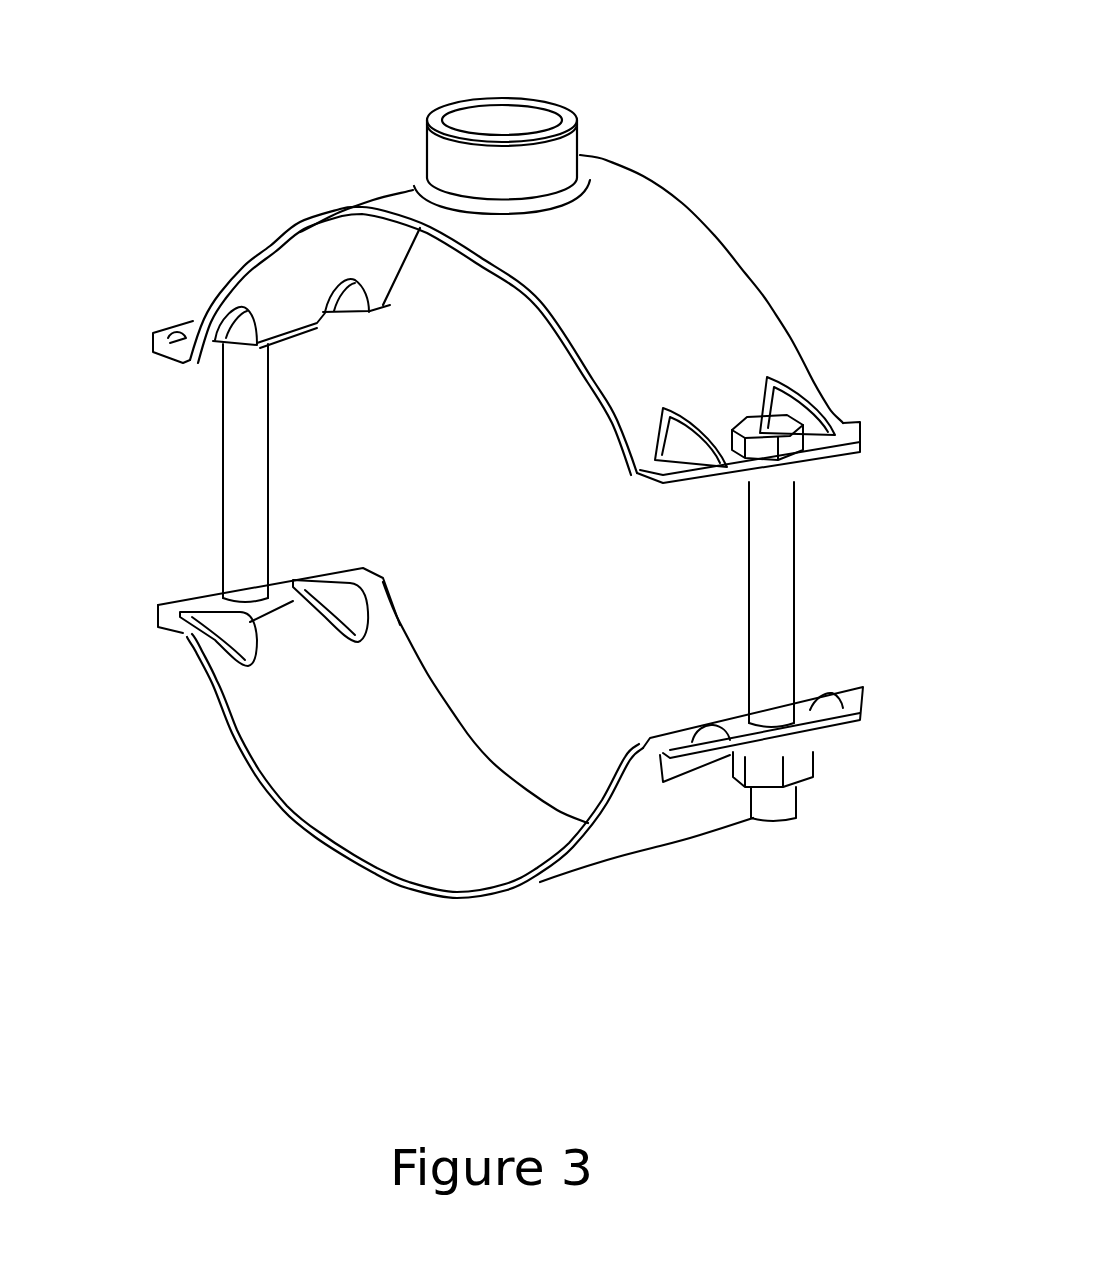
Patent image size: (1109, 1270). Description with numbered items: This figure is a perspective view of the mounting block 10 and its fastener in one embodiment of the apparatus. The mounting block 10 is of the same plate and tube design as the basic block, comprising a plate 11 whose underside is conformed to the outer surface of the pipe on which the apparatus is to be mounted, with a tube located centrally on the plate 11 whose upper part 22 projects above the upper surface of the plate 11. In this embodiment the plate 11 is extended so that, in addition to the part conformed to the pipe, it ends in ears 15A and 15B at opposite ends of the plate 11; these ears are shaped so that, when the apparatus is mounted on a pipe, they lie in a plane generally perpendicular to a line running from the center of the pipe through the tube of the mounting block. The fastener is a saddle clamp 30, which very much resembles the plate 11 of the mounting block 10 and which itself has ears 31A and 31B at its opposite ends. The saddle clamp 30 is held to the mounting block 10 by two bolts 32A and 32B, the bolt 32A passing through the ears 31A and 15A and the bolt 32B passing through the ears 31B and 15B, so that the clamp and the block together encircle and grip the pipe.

The mounting block 10 is at (696, 62).
The plate 11 is at (720, 247).
The upper part of tube 22 is at (438, 152).
The ear 15A is at (163, 338).
The ear 15B is at (845, 430).
The saddle clamp 30 is at (293, 773).
The ear 31A is at (170, 612).
The ear 31B is at (853, 700).
The bolt 32A is at (235, 465).
The bolt 32B is at (778, 593).